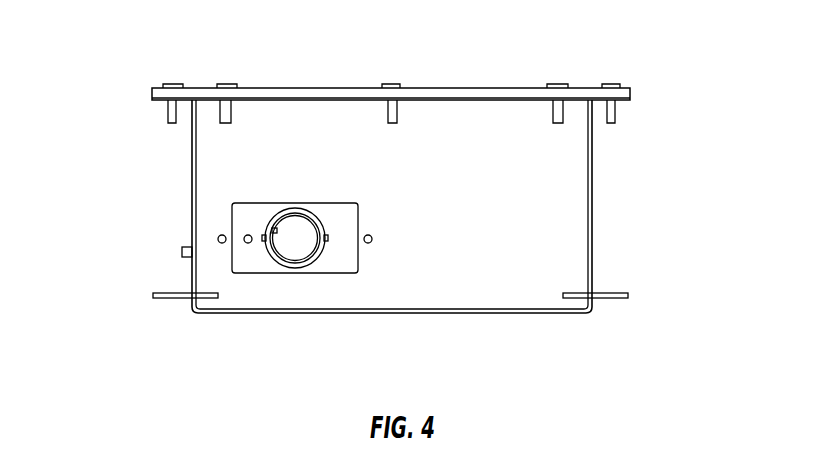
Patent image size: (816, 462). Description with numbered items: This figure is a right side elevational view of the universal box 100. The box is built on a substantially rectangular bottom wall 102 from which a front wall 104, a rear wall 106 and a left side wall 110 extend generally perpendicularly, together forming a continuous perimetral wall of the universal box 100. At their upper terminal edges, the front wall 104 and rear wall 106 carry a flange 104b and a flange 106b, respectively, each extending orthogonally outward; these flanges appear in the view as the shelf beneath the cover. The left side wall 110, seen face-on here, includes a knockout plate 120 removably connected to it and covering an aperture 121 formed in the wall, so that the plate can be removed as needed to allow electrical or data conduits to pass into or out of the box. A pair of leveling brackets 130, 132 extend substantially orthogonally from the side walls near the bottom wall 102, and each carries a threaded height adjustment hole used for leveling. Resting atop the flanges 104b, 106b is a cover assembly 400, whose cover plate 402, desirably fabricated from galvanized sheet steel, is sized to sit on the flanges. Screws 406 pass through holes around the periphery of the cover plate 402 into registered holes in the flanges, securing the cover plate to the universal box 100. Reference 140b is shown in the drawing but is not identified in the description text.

The universal box 100 is at (131, 40).
The bottom wall 102 is at (288, 314).
The front wall 104 is at (592, 218).
The flange 104b is at (628, 102).
The rear wall 106 is at (192, 192).
The flange 106b is at (160, 102).
The left side wall 110 is at (476, 290).
The knockout plate 120 is at (300, 279).
The aperture 121 is at (265, 273).
The leveling bracket 130 is at (612, 292).
The leveling bracket 132 is at (176, 292).
The cover bottom surface 140b is at (491, 103).
The cover assembly 400 is at (393, 101).
The cover plate 402 is at (318, 87).
The screws 406 is at (397, 108).